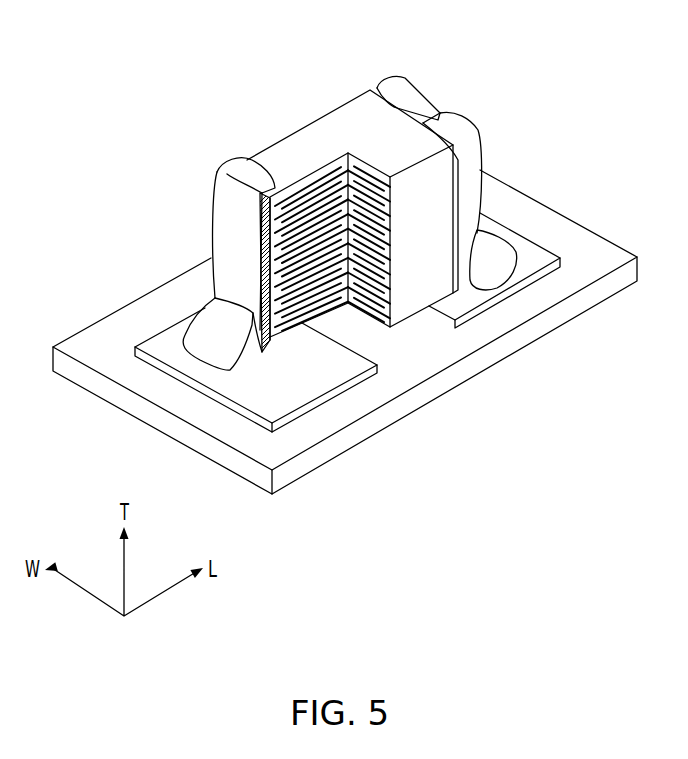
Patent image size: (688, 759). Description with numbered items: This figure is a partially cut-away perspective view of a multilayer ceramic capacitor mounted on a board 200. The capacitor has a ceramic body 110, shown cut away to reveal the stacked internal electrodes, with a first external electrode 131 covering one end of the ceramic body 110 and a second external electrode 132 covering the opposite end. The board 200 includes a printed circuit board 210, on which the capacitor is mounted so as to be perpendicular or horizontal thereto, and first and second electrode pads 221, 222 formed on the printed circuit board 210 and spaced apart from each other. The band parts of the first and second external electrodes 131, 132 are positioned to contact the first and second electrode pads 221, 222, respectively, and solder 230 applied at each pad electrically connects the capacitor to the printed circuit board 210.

The ceramic body 110 is at (294, 114).
The first external electrode 131 is at (234, 164).
The second external electrode 132 is at (376, 78).
The board 200 is at (499, 372).
The printed circuit board 210 is at (430, 368).
The first electrode pad 221 is at (318, 382).
The second electrode pad 222 is at (532, 260).
The solder 230 is at (202, 347).